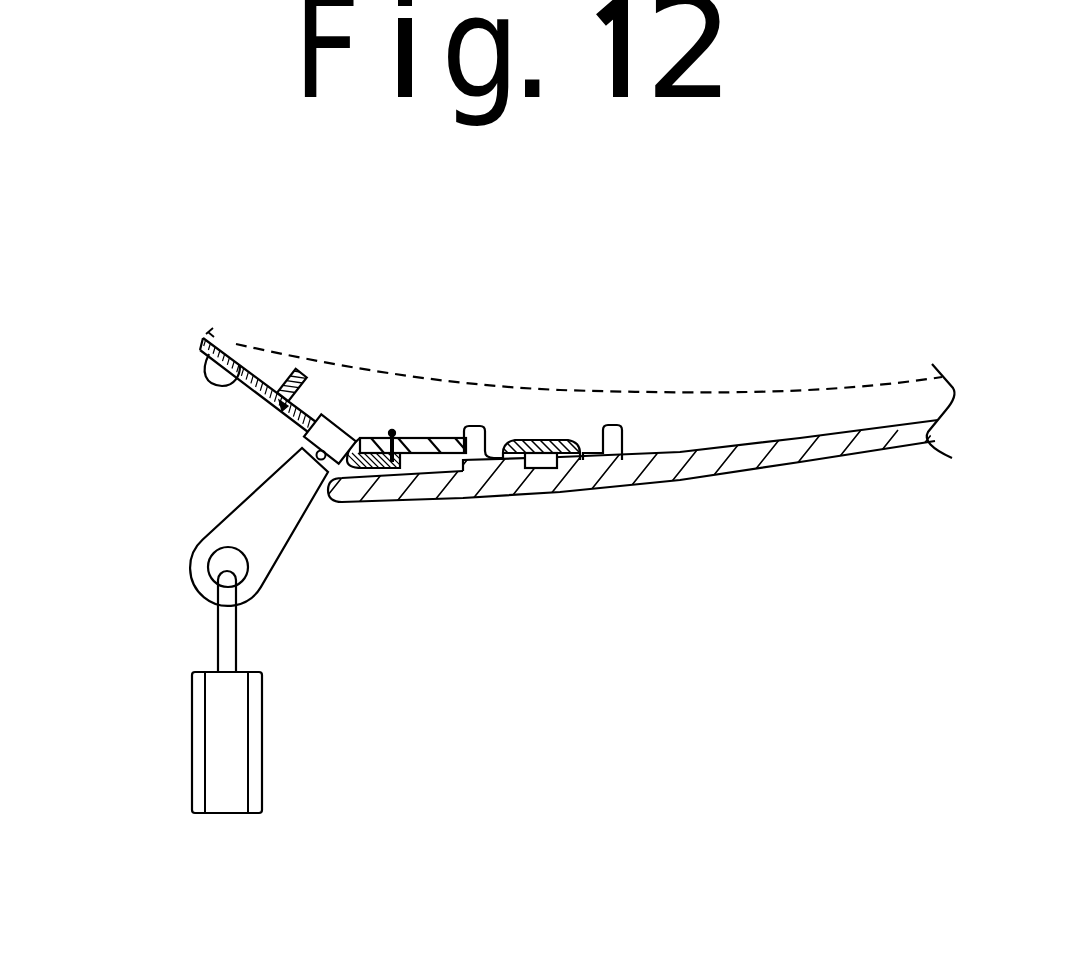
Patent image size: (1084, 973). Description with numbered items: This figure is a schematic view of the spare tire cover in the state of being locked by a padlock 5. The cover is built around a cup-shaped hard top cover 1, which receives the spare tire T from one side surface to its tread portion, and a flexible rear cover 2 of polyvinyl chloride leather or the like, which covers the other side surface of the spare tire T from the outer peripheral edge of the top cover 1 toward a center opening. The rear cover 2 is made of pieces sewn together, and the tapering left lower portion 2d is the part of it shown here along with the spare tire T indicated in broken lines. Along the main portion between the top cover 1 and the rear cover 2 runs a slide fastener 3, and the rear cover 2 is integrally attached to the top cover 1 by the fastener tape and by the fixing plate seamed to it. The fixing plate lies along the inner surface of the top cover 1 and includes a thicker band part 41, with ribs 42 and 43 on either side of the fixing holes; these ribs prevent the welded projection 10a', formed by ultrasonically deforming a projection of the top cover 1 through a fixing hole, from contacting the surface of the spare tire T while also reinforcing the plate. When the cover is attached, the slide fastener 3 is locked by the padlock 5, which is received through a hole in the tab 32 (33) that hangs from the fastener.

The top cover 1 is at (685, 478).
The rear cover 2 is at (204, 331).
The left lower portion 2d is at (237, 346).
The slide fastener 3 is at (293, 438).
The padlock 5 is at (232, 738).
The welded projection 10a' is at (573, 361).
The tab 32 is at (342, 529).
The tab 33 is at (283, 525).
The band part 41 is at (418, 437).
The rib 42 is at (484, 426).
The rib 43 is at (613, 425).
The spare tire T is at (748, 392).